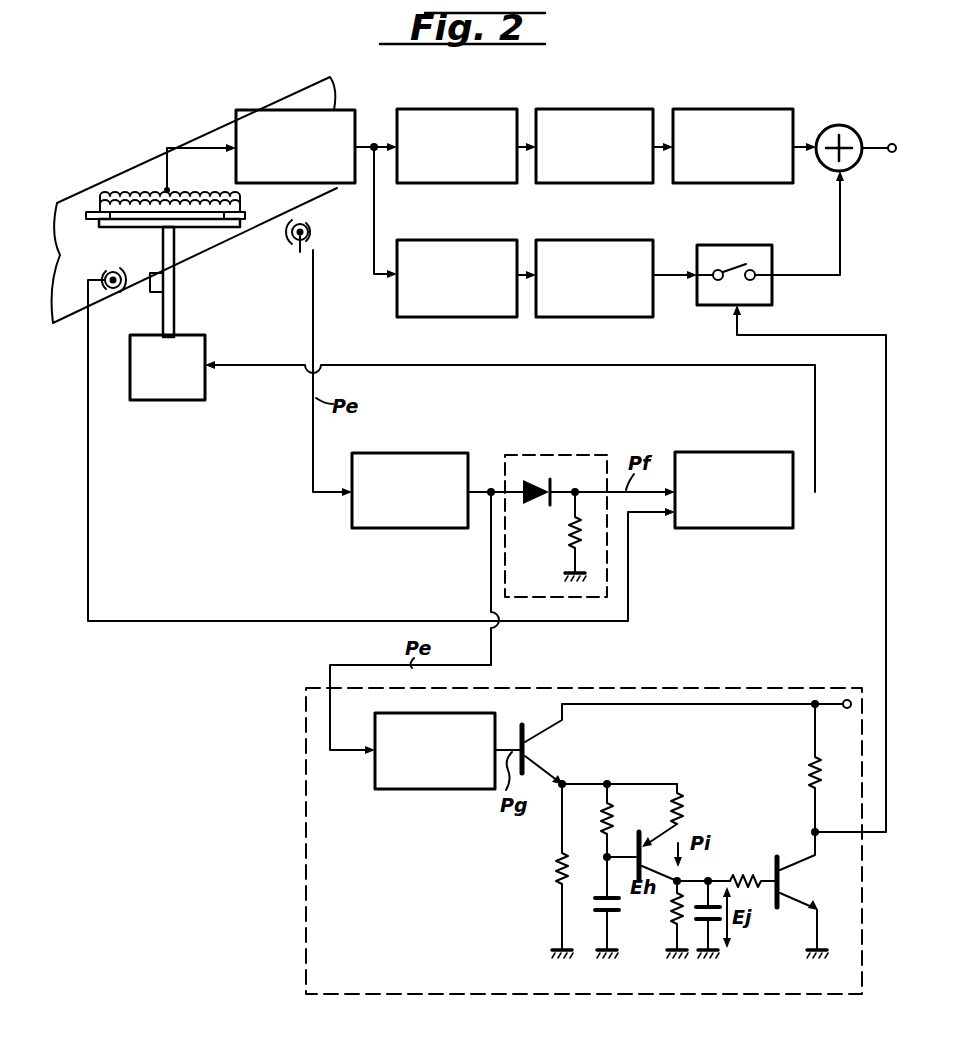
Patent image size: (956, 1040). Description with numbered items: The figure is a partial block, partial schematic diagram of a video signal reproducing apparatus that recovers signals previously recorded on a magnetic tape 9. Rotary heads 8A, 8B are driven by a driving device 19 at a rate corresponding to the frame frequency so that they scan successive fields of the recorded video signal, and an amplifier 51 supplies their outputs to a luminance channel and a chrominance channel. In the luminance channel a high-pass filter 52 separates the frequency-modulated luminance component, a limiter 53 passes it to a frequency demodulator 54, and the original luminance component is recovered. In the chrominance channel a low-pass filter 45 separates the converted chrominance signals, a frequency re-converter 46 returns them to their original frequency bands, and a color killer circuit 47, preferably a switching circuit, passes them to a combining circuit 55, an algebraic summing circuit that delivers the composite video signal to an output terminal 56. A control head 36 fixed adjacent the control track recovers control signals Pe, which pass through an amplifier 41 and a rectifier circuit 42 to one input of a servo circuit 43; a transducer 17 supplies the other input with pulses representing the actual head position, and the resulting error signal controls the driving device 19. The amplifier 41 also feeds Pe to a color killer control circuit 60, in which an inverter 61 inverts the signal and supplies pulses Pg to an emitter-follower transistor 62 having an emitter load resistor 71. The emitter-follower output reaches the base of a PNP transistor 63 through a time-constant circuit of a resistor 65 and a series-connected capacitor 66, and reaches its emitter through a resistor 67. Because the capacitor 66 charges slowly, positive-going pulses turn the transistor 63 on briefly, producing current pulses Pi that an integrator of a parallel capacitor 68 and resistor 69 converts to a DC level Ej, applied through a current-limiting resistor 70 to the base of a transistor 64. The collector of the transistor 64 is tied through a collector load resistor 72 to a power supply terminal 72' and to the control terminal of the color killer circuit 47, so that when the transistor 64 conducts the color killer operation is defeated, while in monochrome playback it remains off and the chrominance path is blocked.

The magnetic tape 9 is at (76, 316).
The rotary head 8A is at (102, 192).
The rotary head 8B is at (248, 225).
The transducer 17 is at (113, 270).
The control head 36 is at (310, 236).
The driving device 19 is at (208, 346).
The amplifier 51 is at (252, 108).
The high-pass filter 52 is at (450, 108).
The limiter 53 is at (590, 108).
The frequency demodulator 54 is at (724, 108).
The combining circuit 55 is at (840, 125).
The output terminal 56 is at (888, 156).
The low-pass filter 45 is at (454, 240).
The frequency re-converter 46 is at (586, 240).
The color killer circuit 47 is at (740, 245).
The amplifier 41 is at (414, 453).
The rectifier circuit 42 is at (598, 455).
The servo circuit 43 is at (766, 452).
The color killer control circuit 60 is at (726, 686).
The inverter 61 is at (466, 790).
The emitter-follower transistor 62 is at (546, 748).
The transistor 63 is at (645, 866).
The transistor 64 is at (790, 880).
The resistor 65 is at (614, 820).
The capacitor 66 is at (618, 906).
The resistor 67 is at (686, 806).
The capacitor 68 is at (702, 936).
The resistor 69 is at (670, 936).
The current-limiting resistor 70 is at (744, 878).
The emitter load resistor 71 is at (556, 876).
The collector load resistor 72 is at (792, 768).
The power supply terminal 72' is at (857, 680).